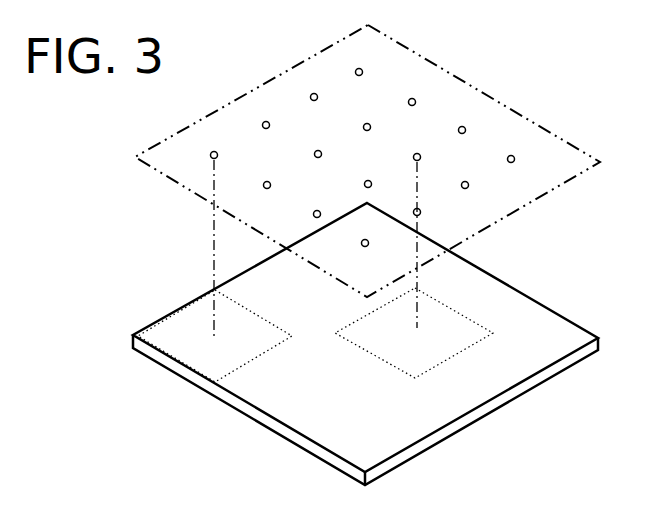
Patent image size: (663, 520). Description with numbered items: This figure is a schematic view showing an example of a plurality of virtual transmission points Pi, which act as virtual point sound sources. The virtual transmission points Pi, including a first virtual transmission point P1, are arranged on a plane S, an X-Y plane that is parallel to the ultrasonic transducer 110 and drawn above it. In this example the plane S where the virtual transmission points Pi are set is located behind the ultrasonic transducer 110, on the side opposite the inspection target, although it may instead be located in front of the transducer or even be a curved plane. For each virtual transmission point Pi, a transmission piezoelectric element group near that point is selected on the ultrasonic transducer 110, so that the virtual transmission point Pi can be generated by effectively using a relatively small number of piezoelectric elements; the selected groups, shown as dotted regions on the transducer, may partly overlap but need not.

The plane S is at (268, 82).
The virtual transmission point P1 is at (218, 130).
The virtual transmission point Pi is at (413, 157).
The ultrasonic transducer 110 is at (277, 433).